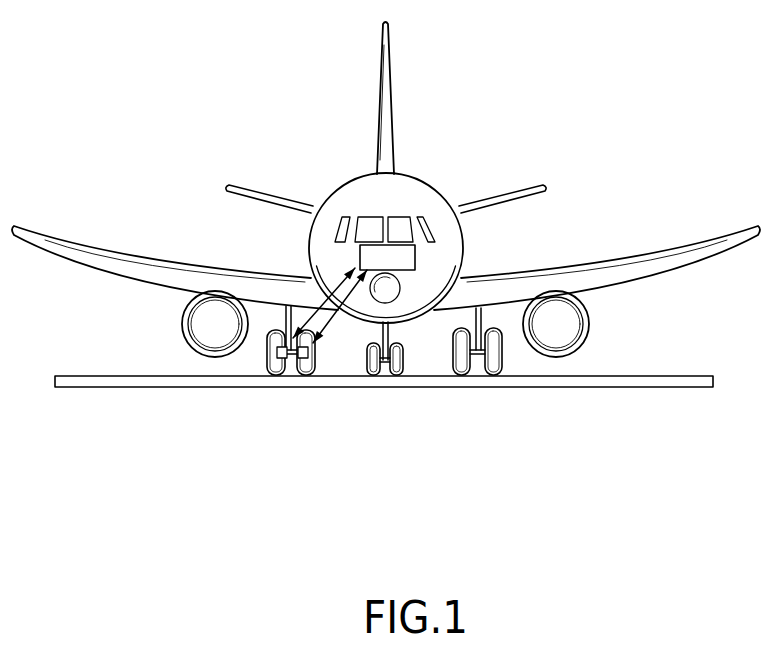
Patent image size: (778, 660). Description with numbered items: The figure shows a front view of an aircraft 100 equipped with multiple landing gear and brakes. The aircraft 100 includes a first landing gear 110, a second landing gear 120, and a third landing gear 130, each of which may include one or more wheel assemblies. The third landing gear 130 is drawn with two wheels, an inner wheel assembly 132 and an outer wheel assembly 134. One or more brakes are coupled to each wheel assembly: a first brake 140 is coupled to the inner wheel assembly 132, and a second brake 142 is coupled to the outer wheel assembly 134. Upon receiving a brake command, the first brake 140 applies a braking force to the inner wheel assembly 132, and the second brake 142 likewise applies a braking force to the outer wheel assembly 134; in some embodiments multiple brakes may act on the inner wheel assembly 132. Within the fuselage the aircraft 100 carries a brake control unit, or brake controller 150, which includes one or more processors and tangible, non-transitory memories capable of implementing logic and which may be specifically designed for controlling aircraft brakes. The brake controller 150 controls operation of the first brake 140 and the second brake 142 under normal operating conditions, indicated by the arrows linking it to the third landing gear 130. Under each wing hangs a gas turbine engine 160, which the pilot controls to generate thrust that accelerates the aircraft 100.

The aircraft 100 is at (250, 100).
The first landing gear 110 is at (502, 362).
The second landing gear 120 is at (406, 375).
The third landing gear 130 is at (297, 380).
The inner wheel assembly 132 is at (306, 375).
The outer wheel assembly 134 is at (277, 375).
The first brake 140 is at (314, 356).
The second brake 142 is at (273, 374).
The brake controller 150 is at (415, 261).
The gas turbine engine 160 is at (589, 323).